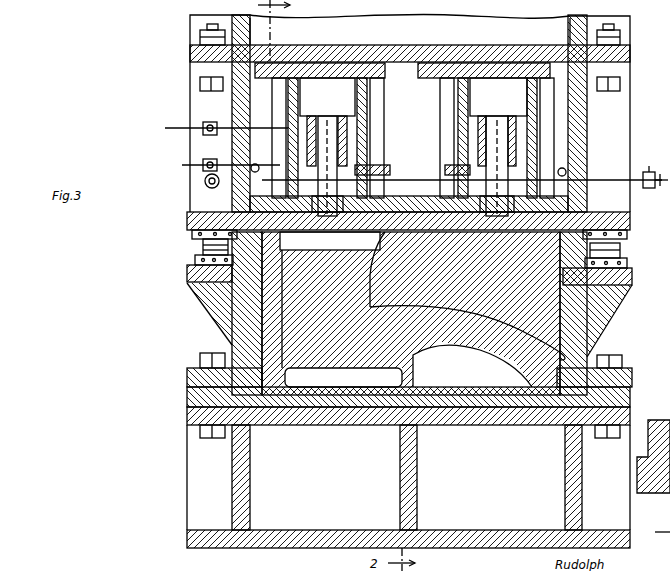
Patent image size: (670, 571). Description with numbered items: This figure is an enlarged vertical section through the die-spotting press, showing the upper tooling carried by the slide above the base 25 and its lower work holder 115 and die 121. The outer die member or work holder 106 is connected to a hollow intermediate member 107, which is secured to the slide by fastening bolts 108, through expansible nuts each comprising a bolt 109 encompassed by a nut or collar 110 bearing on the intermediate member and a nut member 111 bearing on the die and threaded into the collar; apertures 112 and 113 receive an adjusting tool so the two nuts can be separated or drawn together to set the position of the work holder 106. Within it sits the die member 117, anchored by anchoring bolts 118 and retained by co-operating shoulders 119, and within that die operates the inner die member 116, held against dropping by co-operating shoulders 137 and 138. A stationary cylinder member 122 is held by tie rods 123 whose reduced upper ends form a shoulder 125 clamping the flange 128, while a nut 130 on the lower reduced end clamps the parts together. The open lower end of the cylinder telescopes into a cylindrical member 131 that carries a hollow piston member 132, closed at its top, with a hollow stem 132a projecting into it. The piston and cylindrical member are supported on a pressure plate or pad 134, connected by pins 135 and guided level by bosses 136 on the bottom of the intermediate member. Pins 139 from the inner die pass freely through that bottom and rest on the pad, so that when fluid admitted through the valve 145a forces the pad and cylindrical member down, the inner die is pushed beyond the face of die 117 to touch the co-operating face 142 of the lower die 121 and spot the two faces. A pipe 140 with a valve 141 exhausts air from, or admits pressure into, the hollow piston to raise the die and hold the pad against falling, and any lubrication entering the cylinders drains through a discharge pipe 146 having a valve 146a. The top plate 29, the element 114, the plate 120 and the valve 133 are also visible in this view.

The top plate 29 is at (612, 22).
The base 25 is at (400, 482).
The outer die member 106 is at (600, 322).
The intermediate member 107 is at (200, 125).
The fastening bolts 108 is at (608, 91).
The bolt 109 is at (190, 205).
The nut 110 is at (192, 236).
The nut member 111 is at (195, 262).
The apertures 112 is at (203, 248).
The apertures 113 is at (195, 280).
The plate 114 is at (195, 300).
The work holder 115 is at (612, 352).
The inner die member 116 is at (228, 330).
The die member 117 is at (600, 338).
The anchoring bolts 118 is at (215, 320).
The co-operating shoulders 119 is at (600, 296).
The plate 120 is at (627, 264).
The die 121 is at (470, 345).
The stationary cylinder member 122 is at (368, 88).
The tie rods 123 is at (280, 108).
The shoulder 125 is at (232, 100).
The flange 128 is at (385, 72).
The nut 130 is at (660, 494).
The cylindrical member 131 is at (370, 110).
The hollow piston member 132 is at (327, 110).
The hollow stem 132a is at (347, 140).
The valve 133 is at (245, 150).
The pressure plate 134 is at (380, 178).
The pins 135 is at (385, 150).
The bosses 136 is at (411, 313).
The co-operating shoulders 137 is at (380, 262).
The co-operating shoulders 138 is at (395, 252).
The pins 139 is at (330, 241).
The pipe 140 is at (650, 170).
The valve 141 is at (212, 188).
The co-operating face 142 is at (343, 377).
The valve 145a is at (203, 128).
The discharge pipe 146 is at (255, 164).
The valve 146a is at (200, 160).